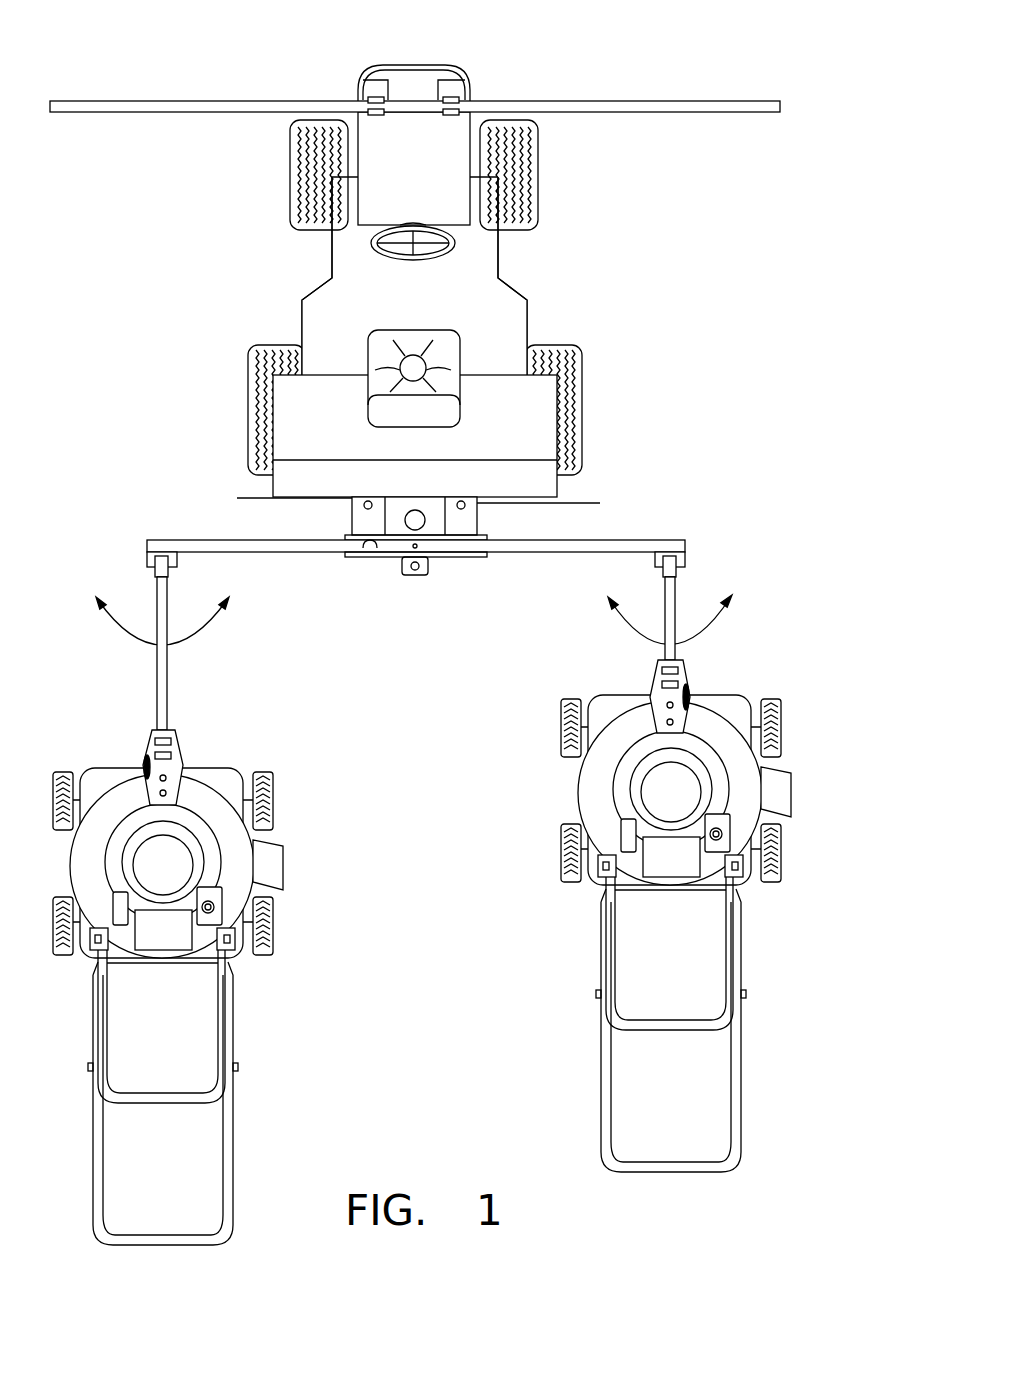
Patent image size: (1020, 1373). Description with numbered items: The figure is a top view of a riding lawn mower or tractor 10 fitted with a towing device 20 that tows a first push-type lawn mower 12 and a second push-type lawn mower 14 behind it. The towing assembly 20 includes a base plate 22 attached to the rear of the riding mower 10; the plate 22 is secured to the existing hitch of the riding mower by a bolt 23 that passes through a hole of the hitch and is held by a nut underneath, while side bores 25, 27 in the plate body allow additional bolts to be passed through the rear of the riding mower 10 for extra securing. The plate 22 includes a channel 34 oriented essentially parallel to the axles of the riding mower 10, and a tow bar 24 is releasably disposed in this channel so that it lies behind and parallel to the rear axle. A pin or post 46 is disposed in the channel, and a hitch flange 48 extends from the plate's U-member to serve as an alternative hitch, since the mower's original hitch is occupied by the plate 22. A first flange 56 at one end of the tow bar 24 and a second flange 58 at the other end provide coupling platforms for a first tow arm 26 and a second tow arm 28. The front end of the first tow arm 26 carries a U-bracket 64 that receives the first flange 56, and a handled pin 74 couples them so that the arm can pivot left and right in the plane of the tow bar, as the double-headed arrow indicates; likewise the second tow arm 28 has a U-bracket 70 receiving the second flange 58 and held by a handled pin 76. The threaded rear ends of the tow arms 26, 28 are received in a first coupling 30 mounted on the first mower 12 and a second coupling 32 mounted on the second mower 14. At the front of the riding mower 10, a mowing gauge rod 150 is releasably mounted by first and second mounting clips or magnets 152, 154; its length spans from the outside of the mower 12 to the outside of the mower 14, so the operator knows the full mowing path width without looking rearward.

The riding lawn mower 10 is at (503, 300).
The first push-type lawn mower 12 is at (745, 790).
The second push-type lawn mower 14 is at (232, 862).
The towing device 20 is at (718, 428).
The base plate 22 is at (490, 523).
The bolt 23 is at (418, 512).
The tow bar 24 is at (293, 568).
The bore 25 is at (237, 498).
The first tow arm 26 is at (686, 634).
The bore 27 is at (600, 503).
The second tow arm 28 is at (178, 704).
The first coupling 30 is at (695, 669).
The second coupling 32 is at (188, 744).
The channel 34 is at (378, 557).
The post 46 is at (415, 546).
The hitch flange 48 is at (415, 575).
The first flange 56 is at (686, 563).
The second flange 58 is at (147, 562).
The U-bracket 64 is at (664, 578).
The U-bracket 70 is at (172, 578).
The handled pin 74 is at (676, 557).
The handled pin 76 is at (154, 557).
The mowing gauge 150 is at (578, 107).
The first mounting clip 152 is at (456, 92).
The second mounting clip 154 is at (372, 96).